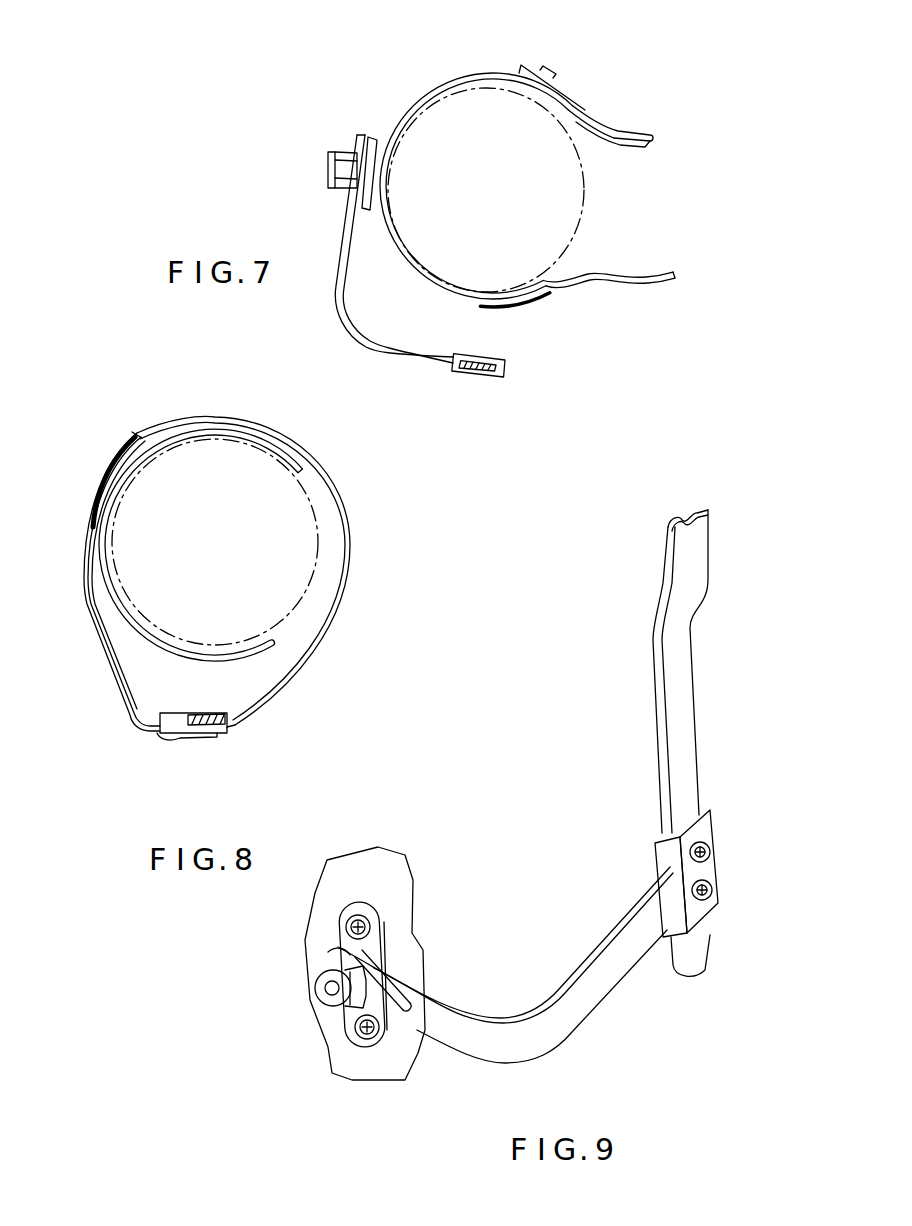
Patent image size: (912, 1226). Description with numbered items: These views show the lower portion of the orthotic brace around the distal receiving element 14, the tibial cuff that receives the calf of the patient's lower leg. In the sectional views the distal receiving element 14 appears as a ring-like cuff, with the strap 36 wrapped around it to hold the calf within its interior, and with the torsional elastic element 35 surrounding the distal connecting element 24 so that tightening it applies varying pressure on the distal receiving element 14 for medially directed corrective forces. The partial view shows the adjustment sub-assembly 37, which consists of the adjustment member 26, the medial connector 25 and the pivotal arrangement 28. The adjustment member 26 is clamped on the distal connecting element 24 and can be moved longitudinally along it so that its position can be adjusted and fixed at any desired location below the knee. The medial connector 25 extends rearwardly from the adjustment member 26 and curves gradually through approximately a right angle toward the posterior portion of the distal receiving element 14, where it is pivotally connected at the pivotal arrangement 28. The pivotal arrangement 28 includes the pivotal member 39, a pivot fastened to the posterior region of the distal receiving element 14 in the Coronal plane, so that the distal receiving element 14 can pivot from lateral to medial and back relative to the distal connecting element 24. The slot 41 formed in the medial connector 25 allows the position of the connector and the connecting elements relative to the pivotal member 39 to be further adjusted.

In FIG. 7, the distal receiving element 14 is at (428, 89).
In FIG. 8, the distal receiving element 14 is at (272, 648).
In FIG. 9, the distal receiving element 14 is at (392, 870).
In FIG. 7, the distal connecting element 24 is at (483, 358).
In FIG. 8, the distal connecting element 24 is at (200, 715).
In FIG. 9, the distal connecting element 24 is at (683, 727).
In FIG. 7, the medial connector 25 is at (400, 361).
In FIG. 9, the medial connector 25 is at (597, 997).
In FIG. 7, the adjustment member 26 is at (507, 379).
In FIG. 9, the adjustment member 26 is at (722, 849).
In FIG. 7, the pivotal arrangement 28 is at (301, 134).
In FIG. 9, the pivotal arrangement 28 is at (281, 974).
In FIG. 7, the torsional elastic element 35 is at (609, 280).
In FIG. 8, the torsional elastic element 35 is at (97, 657).
In FIG. 7, the strap 36 is at (586, 90).
In FIG. 7, the adjustment sub-assembly 37 is at (542, 381).
In FIG. 9, the adjustment sub-assembly 37 is at (724, 850).
In FIG. 7, the pivotal member 39 is at (318, 160).
In FIG. 9, the pivotal member 39 is at (330, 988).
In FIG. 9, the slot 41 is at (423, 966).